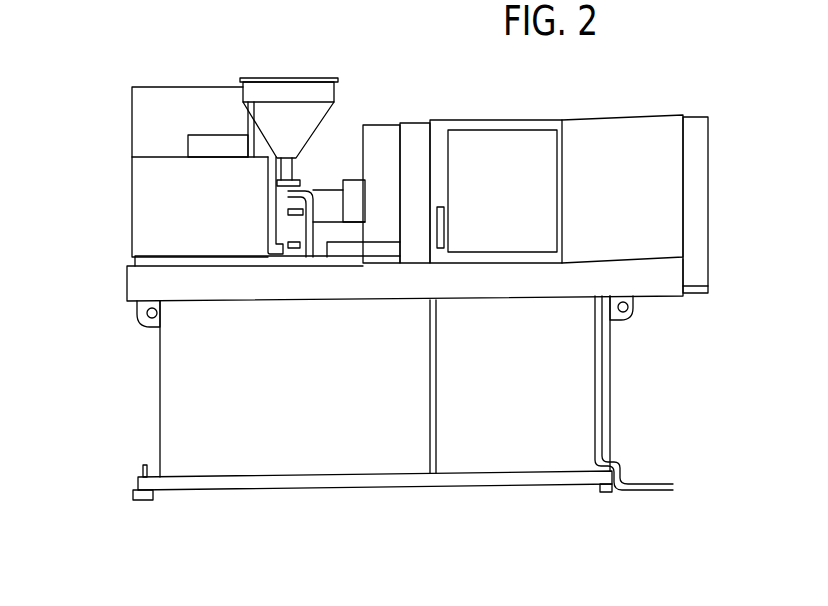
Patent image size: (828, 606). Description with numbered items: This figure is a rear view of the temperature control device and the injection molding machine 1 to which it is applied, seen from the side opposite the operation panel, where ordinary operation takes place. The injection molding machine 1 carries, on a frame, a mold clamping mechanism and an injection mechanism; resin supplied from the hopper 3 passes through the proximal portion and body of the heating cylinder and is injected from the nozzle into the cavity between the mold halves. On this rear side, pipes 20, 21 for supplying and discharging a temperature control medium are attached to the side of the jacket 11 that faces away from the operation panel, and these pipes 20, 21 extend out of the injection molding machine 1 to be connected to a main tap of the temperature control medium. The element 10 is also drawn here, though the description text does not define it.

The injection molding machine 1 is at (398, 318).
The hopper 3 is at (296, 95).
The stationary mold half 10 is at (262, 197).
The jacket 11 is at (278, 208).
The pipe 20 is at (303, 188).
The pipe 21 is at (297, 247).